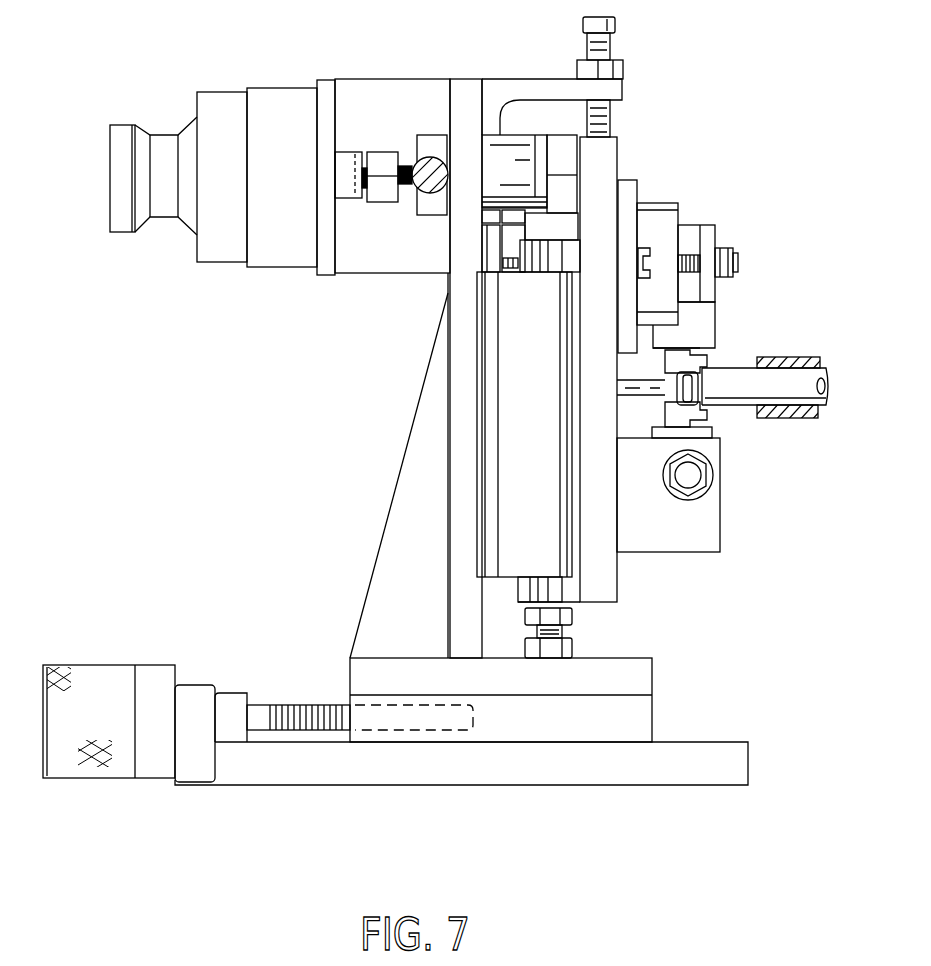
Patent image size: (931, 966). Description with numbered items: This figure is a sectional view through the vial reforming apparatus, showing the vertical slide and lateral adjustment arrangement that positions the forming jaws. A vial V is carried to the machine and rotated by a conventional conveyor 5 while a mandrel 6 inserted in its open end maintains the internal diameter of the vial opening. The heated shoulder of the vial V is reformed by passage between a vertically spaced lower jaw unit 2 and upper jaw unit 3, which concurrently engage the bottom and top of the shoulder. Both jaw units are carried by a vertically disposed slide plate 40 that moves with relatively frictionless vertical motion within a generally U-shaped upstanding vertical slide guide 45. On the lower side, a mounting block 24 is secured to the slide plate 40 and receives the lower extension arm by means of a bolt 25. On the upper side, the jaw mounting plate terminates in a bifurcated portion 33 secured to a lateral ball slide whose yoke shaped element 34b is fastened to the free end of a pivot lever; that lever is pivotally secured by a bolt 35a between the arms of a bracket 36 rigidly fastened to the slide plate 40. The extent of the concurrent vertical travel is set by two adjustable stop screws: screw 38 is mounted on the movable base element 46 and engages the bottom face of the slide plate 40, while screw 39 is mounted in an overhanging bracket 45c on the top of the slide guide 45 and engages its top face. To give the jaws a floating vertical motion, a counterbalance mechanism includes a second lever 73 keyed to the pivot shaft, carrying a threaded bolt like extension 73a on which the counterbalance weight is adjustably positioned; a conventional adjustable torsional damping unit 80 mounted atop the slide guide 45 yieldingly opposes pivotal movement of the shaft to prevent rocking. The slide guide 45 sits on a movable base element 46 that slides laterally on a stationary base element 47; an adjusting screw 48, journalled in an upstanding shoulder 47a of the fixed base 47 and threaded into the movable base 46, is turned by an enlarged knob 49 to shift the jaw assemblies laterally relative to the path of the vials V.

The torsional damping unit 80 is at (199, 88).
The second lever 73 is at (432, 135).
The threaded bolt like extension 73a is at (416, 163).
The vertical slide guide 45 is at (405, 500).
The overhanging bracket 45c is at (531, 78).
The adjustable stop screw 39 is at (611, 50).
The slide plate 40 is at (606, 148).
The adjustable stop screw 38 is at (574, 649).
The bracket 36 is at (628, 186).
The bolt 35a is at (646, 248).
The bifurcated portion 33 is at (718, 226).
The yoke shaped element 34b is at (734, 260).
The upper jaw unit 3 is at (664, 360).
The lower jaw unit 2 is at (664, 413).
The mandrel 6 is at (638, 396).
The conveyor 5 is at (763, 357).
The vial V is at (722, 368).
The mounting block 24 is at (722, 528).
The bolt 25 is at (708, 474).
The movable base element 46 is at (360, 672).
The adjusting screw 48 is at (338, 732).
The stationary base element 47 is at (750, 756).
The upstanding shoulder 47a is at (193, 684).
The enlarged knob 49 is at (89, 772).